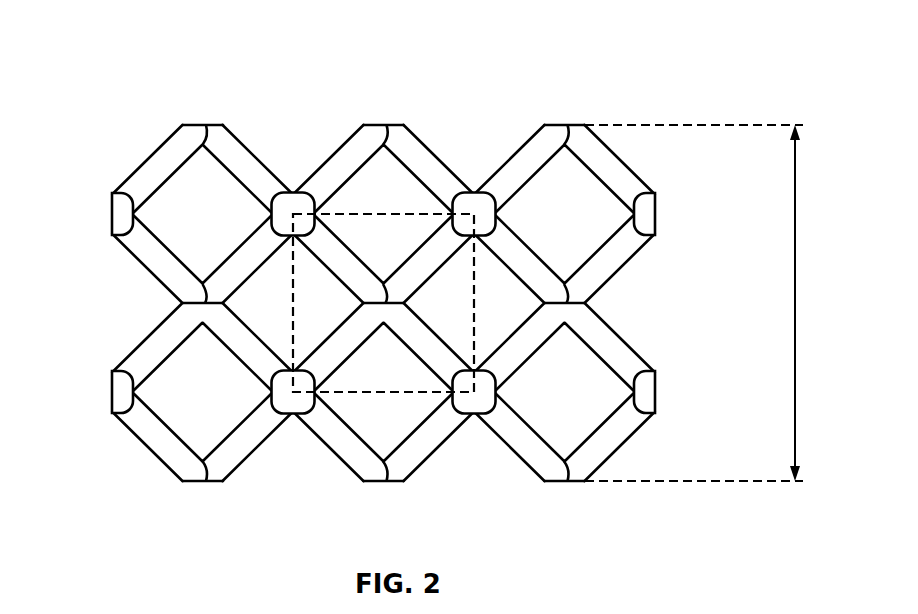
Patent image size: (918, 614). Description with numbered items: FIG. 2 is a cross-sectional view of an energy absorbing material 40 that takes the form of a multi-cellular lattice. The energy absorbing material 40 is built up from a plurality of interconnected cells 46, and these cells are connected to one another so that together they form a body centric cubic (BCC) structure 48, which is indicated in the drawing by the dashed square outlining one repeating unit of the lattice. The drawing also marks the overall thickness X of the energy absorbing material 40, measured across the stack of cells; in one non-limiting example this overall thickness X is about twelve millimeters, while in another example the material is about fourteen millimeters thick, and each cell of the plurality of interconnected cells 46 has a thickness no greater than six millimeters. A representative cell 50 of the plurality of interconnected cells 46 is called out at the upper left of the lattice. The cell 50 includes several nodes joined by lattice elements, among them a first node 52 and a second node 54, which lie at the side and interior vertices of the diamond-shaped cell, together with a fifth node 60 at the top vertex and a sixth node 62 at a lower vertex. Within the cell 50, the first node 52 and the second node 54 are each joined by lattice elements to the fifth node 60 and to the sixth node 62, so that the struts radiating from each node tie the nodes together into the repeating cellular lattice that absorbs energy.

The energy absorbing material 40 is at (160, 45).
The plurality of interconnected cells 46 is at (130, 306).
The body centric cubic (BCC) structure 48 is at (474, 333).
The cell 50 is at (141, 166).
The first node 52 is at (112, 214).
The second node 54 is at (282, 203).
The fifth node 60 is at (205, 126).
The sixth node 62 is at (112, 393).
The overall thickness X is at (795, 303).